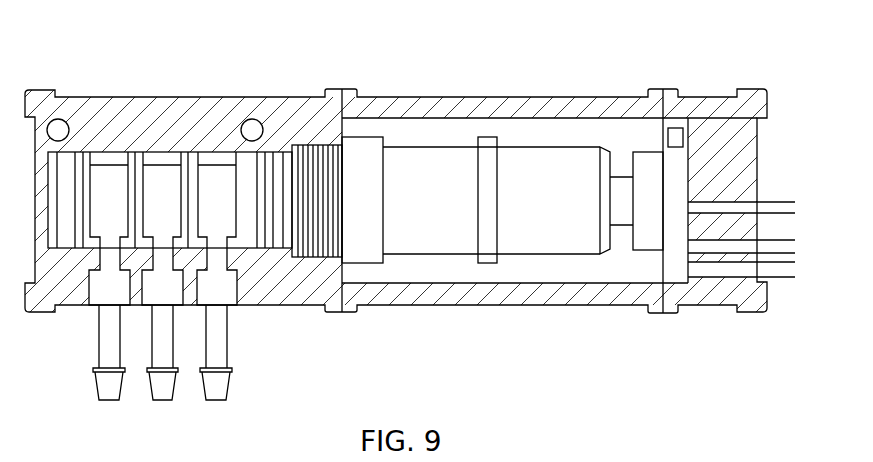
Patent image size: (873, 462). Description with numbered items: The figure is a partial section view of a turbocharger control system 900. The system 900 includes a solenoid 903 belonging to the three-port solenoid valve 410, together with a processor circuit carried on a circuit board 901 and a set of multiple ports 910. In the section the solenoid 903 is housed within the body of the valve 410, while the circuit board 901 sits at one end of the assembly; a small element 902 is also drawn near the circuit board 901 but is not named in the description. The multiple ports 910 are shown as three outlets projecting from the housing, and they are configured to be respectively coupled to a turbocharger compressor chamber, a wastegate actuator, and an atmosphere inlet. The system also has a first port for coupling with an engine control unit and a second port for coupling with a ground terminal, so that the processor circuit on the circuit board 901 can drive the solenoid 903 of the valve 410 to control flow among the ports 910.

The turbocharger control system 900 is at (93, 50).
The three-port solenoid valve 410 is at (500, 97).
The circuit board 901 is at (675, 270).
The seal element 902 is at (677, 130).
The solenoid 903 is at (440, 237).
The multiple ports 910 is at (79, 373).